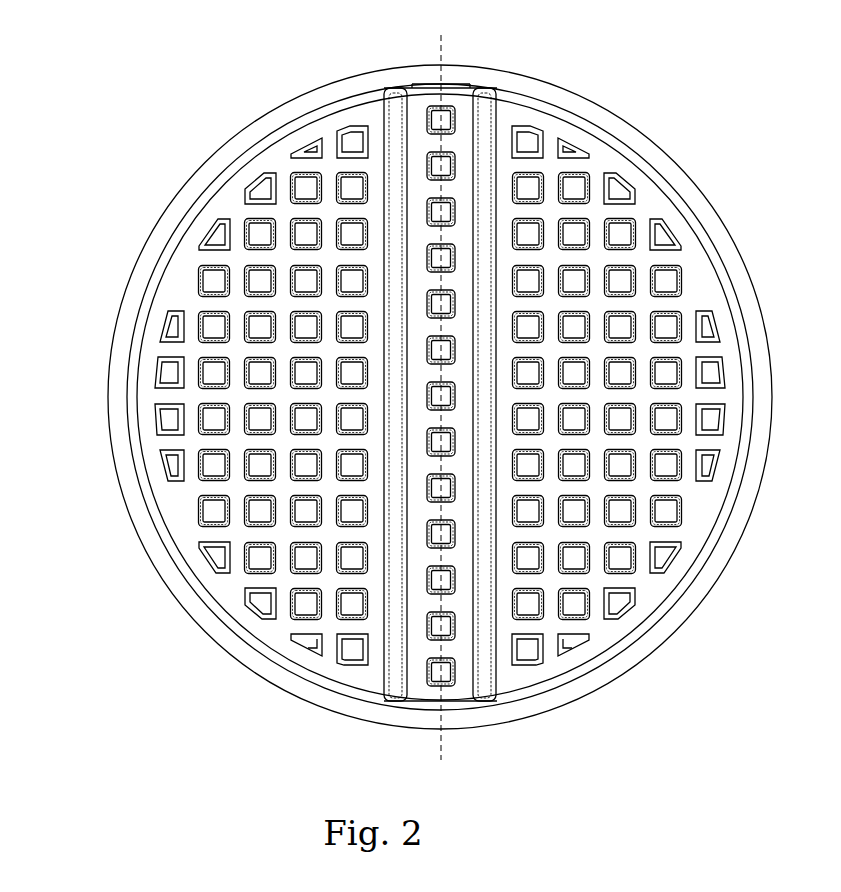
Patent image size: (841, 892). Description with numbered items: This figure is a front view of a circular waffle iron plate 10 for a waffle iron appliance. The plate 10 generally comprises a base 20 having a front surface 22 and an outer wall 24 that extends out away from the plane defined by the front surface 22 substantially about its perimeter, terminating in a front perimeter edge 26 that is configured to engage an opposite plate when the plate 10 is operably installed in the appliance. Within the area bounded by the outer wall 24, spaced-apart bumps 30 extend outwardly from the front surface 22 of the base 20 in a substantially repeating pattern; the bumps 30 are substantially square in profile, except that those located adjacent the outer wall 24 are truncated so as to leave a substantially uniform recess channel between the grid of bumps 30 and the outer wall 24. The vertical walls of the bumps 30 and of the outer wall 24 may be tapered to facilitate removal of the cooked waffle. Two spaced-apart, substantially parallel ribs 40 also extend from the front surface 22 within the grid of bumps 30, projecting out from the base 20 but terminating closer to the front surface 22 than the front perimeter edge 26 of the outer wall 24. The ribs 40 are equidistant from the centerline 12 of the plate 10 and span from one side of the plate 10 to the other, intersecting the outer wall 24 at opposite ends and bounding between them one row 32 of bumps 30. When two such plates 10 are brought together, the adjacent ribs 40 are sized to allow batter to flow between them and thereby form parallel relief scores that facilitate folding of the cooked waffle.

The waffle iron plate 10 is at (130, 126).
The centerline 12 is at (437, 717).
The base 20 is at (738, 603).
The front surface 22 is at (697, 502).
The outer wall 24 is at (769, 428).
The front perimeter edge 26 is at (756, 376).
The bumps 30 is at (454, 162).
The row 32 is at (424, 46).
The ribs 40 is at (366, 114).